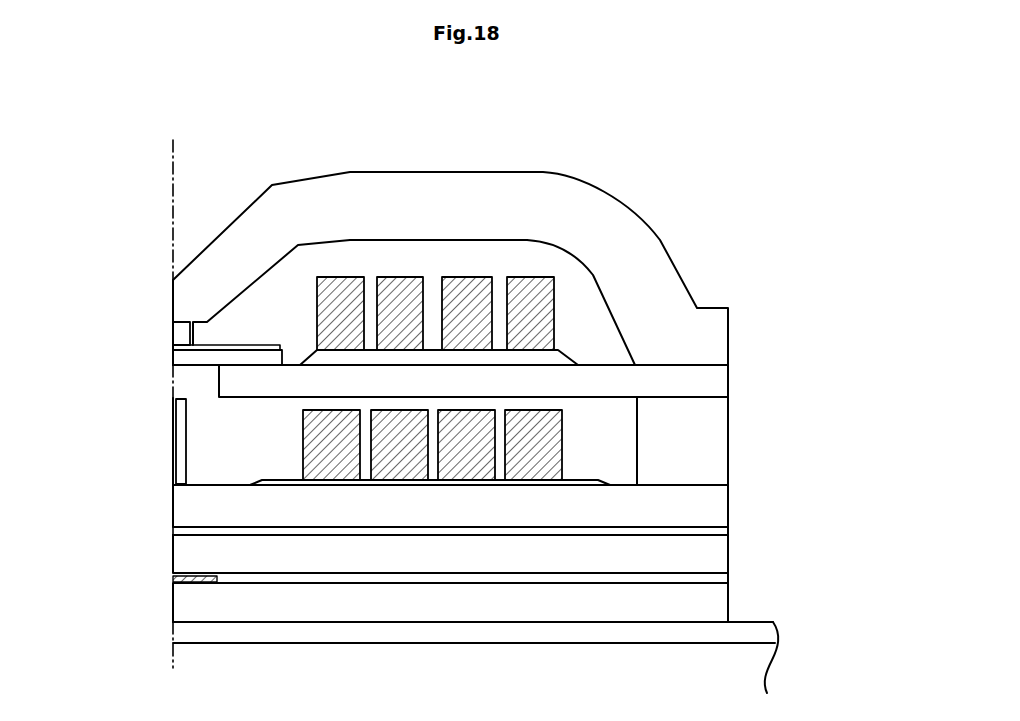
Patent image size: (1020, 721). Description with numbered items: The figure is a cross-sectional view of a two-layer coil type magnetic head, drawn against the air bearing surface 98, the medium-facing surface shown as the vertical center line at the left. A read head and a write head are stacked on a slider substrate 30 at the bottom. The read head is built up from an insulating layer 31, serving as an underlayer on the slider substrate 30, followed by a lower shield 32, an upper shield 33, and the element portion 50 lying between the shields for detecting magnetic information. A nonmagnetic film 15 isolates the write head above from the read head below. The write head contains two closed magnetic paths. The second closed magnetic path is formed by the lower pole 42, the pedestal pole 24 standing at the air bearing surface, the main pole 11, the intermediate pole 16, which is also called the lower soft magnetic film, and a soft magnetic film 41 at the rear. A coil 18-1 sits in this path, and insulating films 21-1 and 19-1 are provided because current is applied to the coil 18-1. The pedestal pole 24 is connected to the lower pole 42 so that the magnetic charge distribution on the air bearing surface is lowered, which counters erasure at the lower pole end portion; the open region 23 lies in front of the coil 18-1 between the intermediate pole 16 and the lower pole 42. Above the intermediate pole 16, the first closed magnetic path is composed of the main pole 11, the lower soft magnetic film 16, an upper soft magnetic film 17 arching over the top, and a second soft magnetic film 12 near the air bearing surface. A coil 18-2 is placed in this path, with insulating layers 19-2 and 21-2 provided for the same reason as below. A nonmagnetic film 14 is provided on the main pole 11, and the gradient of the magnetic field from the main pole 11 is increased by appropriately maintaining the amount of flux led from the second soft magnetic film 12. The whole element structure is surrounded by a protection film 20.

The air bearing surface 98 is at (165, 177).
The protection film 20 is at (207, 197).
The upper soft magnetic film 17 is at (588, 220).
The second soft magnetic film 12 is at (183, 332).
The nonmagnetic film 14 is at (178, 347).
The main pole 11 is at (188, 357).
The intermediate pole (lower soft magnetic film) 16 is at (720, 382).
The soft magnetic film 41 is at (720, 411).
The coil 18-2 is at (555, 277).
The insulating layer 19-2 is at (413, 253).
The insulating layer 21-2 is at (557, 350).
The coil 18-1 is at (540, 438).
The insulating film 19-1 is at (610, 457).
The insulating film 21-1 is at (590, 483).
The pedestal pole 24 is at (178, 422).
The gap region 23 is at (207, 460).
The lower pole 42 is at (720, 507).
The nonmagnetic film 15 is at (222, 533).
The upper shield 33 is at (720, 555).
The element portion 50 is at (175, 580).
The lower shield 32 is at (720, 602).
The insulating layer (underlayer) 31 is at (762, 636).
The slider substrate 30 is at (763, 667).